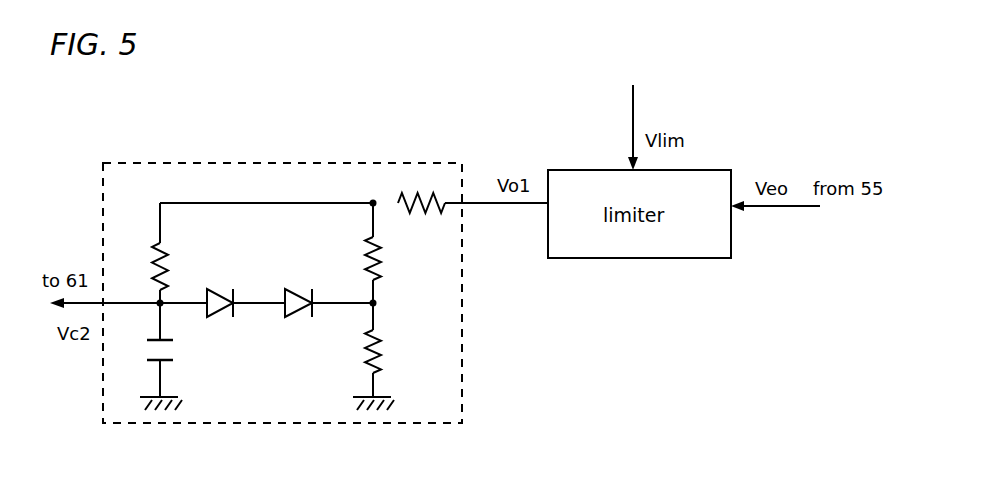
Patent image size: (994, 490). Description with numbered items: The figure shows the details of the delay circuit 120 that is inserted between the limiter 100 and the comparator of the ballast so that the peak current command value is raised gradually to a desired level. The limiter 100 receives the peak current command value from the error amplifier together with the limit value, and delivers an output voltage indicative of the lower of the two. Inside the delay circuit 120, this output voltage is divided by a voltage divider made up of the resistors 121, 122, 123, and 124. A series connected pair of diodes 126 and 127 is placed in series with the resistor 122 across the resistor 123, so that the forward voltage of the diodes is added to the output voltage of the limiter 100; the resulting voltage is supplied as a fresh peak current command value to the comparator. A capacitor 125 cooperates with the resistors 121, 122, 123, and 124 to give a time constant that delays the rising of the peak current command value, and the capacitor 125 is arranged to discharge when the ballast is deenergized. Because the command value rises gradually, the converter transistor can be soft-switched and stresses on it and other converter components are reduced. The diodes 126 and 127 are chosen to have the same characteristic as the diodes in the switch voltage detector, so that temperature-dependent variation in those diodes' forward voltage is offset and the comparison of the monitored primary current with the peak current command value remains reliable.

The limiter 100 is at (639, 214).
The delay circuit 120 is at (445, 163).
The resistor 121 is at (422, 193).
The resistor 122 is at (358, 268).
The resistor 123 is at (175, 273).
The resistor 124 is at (390, 350).
The capacitor 125 is at (145, 357).
The diode 126 is at (222, 328).
The diode 127 is at (298, 327).